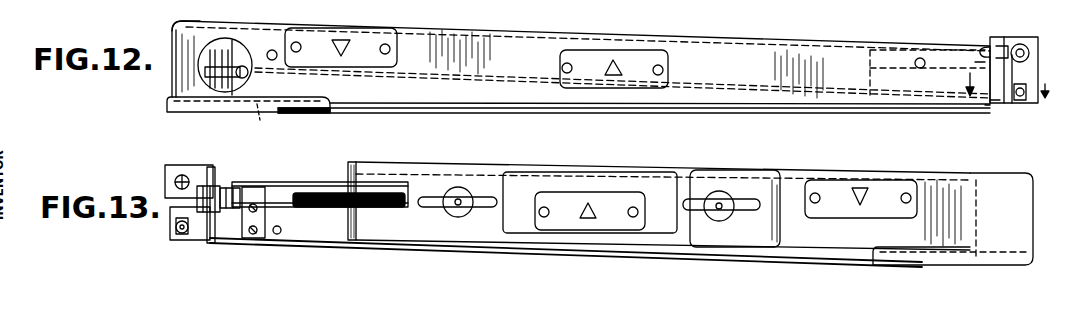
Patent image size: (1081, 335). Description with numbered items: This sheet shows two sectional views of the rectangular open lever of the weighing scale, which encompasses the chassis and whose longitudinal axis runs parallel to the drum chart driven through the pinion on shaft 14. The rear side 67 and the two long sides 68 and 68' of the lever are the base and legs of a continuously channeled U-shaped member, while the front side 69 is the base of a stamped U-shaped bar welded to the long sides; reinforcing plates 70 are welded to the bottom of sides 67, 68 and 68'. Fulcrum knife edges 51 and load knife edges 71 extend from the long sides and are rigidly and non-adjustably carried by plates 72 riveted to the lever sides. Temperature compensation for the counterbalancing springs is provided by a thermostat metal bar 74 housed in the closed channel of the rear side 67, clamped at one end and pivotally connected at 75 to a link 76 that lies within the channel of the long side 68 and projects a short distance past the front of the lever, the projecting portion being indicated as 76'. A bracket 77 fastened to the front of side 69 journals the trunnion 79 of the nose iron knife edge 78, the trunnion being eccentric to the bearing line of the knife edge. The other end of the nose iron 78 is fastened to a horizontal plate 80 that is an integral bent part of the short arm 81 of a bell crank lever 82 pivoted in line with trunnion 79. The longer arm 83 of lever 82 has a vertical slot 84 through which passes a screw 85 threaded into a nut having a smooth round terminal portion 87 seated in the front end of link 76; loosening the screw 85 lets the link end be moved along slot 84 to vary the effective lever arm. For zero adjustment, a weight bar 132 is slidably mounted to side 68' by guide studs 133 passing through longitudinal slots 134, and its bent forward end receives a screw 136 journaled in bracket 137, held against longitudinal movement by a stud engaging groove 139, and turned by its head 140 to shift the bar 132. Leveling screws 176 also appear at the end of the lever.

In FIG. 12, the shaft 14 is at (1008, 101).
In FIG. 12, the fulcrum knife edges 51 is at (343, 52).
In FIG. 13, the fulcrum knife edges 51 is at (868, 197).
In FIG. 12, the rear side 67 is at (193, 22).
In FIG. 13, the rear side 67 is at (1017, 176).
In FIG. 12, the long side 68 is at (581, 52).
In FIG. 13, the long side 68' is at (659, 199).
In FIG. 12, the front side 69 is at (975, 62).
In FIG. 12, the reinforcing plates 70 is at (297, 115).
In FIG. 13, the reinforcing plates 70 is at (360, 250).
In FIG. 12, the load knife edges 71 is at (616, 65).
In FIG. 13, the load knife edges 71 is at (590, 212).
In FIG. 12, the plates 72 is at (385, 40).
In FIG. 13, the plates 72 is at (558, 202).
In FIG. 12, the thermostat metal bar 74 is at (209, 50).
In FIG. 12, the pivotal connection 75 is at (245, 66).
In FIG. 12, the link 76 is at (988, 127).
In FIG. 12, the thin rail 76' is at (634, 112).
In FIG. 12, the bracket 77 is at (1012, 40).
In FIG. 13, the bracket 77 is at (182, 165).
In FIG. 13, the nose iron knife edge 78 is at (175, 182).
In FIG. 13, the trunnion 79 is at (195, 178).
In FIG. 12, the horizontal plate 80 is at (985, 49).
In FIG. 12, the short arm 81 is at (1003, 48).
In FIG. 12, the bell crank lever 82 is at (1030, 48).
In FIG. 12, the longer arm 83 is at (990, 100).
In FIG. 13, the longer arm 83 is at (175, 222).
In FIG. 12, the vertical slot 84 is at (1027, 92).
In FIG. 12, the screw 85 is at (1020, 100).
In FIG. 13, the smooth round terminal portion 87 is at (178, 232).
In FIG. 13, the bar 132 is at (725, 182).
In FIG. 13, the guide studs 133 is at (460, 188).
In FIG. 13, the longitudinal slots 134 is at (428, 207).
In FIG. 13, the screw 136 is at (293, 184).
In FIG. 13, the bracket 137 is at (267, 230).
In FIG. 13, the groove 139 is at (222, 215).
In FIG. 13, the head 140 is at (233, 182).
In FIG. 13, the screws 176 is at (200, 228).